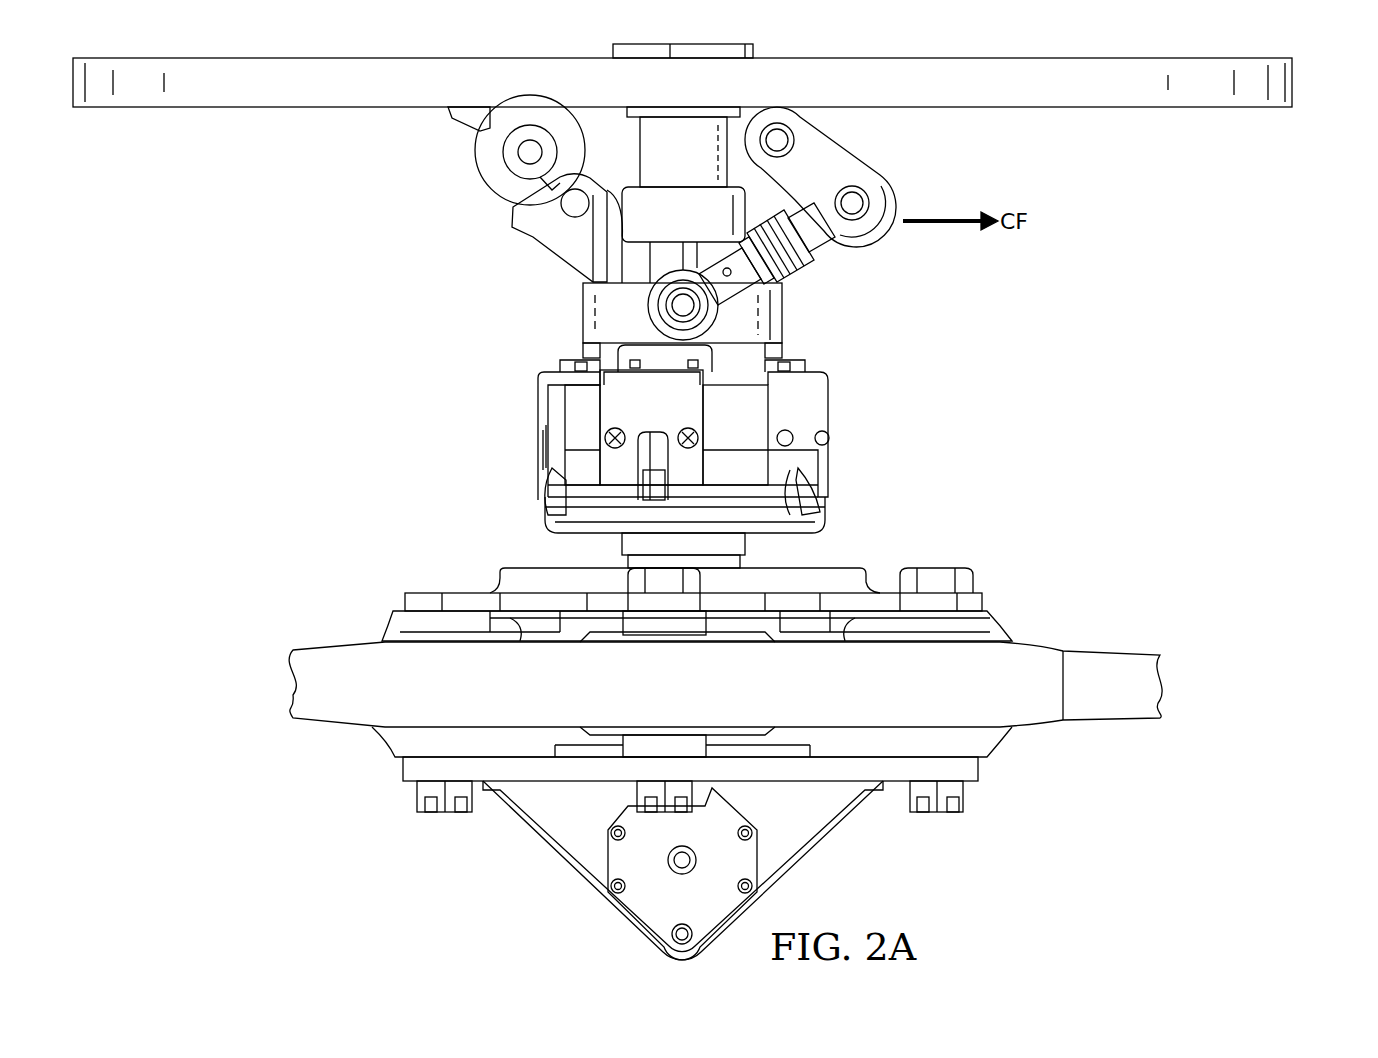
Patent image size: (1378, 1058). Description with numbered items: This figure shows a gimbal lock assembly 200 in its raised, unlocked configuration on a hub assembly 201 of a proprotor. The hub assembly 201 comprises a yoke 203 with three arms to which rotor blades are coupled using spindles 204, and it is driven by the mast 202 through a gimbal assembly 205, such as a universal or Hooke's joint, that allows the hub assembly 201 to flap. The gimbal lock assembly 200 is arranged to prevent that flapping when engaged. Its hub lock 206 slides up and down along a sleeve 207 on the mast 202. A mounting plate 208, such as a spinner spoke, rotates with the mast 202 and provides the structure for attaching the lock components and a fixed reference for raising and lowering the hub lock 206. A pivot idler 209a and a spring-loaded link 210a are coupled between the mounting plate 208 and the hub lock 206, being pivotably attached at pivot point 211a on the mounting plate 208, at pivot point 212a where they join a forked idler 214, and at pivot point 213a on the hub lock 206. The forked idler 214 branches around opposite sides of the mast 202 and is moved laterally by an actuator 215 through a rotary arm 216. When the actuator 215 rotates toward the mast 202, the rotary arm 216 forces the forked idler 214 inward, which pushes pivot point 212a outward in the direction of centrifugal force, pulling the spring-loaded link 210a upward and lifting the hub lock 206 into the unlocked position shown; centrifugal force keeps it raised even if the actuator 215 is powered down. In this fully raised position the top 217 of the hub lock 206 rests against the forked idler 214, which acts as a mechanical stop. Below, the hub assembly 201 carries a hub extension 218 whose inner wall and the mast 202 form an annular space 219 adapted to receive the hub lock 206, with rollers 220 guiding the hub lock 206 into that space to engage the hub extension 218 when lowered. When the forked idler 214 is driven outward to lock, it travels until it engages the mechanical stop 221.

The gimbal lock assembly 200 is at (680, 220).
The hub assembly 201 is at (390, 533).
The mast 202 is at (705, 164).
The yoke 203 is at (350, 722).
The spindle 204 is at (985, 745).
The gimbal assembly 205 is at (832, 847).
The hub lock 206 is at (820, 400).
The sleeve 207 is at (705, 229).
The mounting plate 208 is at (1293, 86).
The pivot idler 209a is at (838, 155).
The spring-loaded link 210a is at (830, 250).
The pivot point 211a is at (788, 138).
The pivot point 212a is at (893, 200).
The pivot point 213a is at (622, 300).
The forked idler 214 is at (545, 237).
The actuator 215 is at (486, 152).
The rotary arm 216 is at (492, 188).
The top of hub lock 217 is at (773, 318).
The hub extension 218 is at (465, 600).
The annular space 219 is at (552, 556).
The rollers 220 is at (546, 490).
The mechanical stop 221 is at (450, 114).